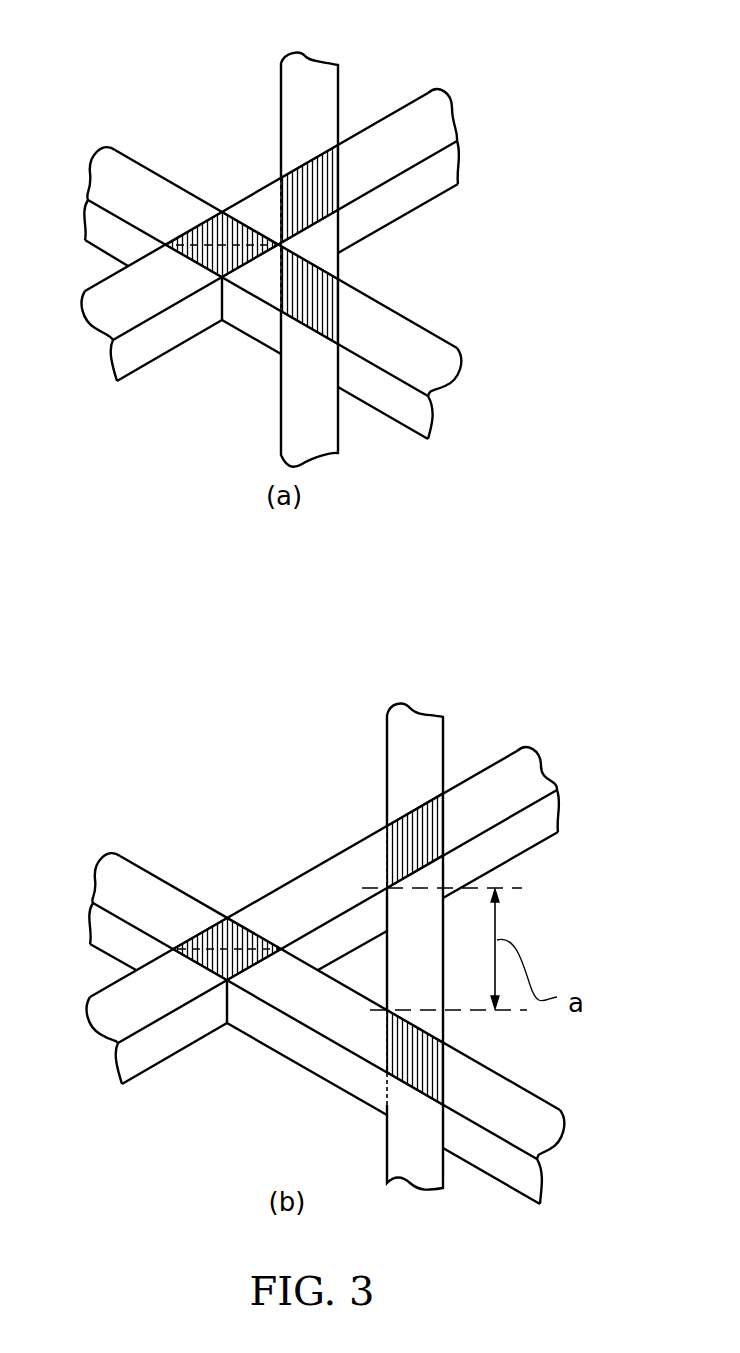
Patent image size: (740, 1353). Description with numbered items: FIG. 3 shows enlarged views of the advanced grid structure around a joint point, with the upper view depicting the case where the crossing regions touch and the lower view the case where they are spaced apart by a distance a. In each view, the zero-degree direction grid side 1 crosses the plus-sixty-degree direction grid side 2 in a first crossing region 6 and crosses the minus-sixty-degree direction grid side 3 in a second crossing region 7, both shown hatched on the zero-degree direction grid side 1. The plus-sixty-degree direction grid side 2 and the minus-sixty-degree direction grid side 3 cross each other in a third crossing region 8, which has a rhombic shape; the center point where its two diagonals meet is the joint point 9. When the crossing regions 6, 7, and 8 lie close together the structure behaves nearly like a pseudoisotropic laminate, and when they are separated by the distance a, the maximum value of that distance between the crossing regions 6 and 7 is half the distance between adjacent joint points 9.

The 0-degree direction grid side 1 is at (309, 80).
The +60-degree direction grid side 2 is at (130, 172).
The −60-degree direction grid side 3 is at (431, 123).
The first crossing region 6 is at (308, 310).
The second crossing region 7 is at (322, 197).
The third crossing region 8 is at (195, 263).
The joint point 9 is at (222, 247).